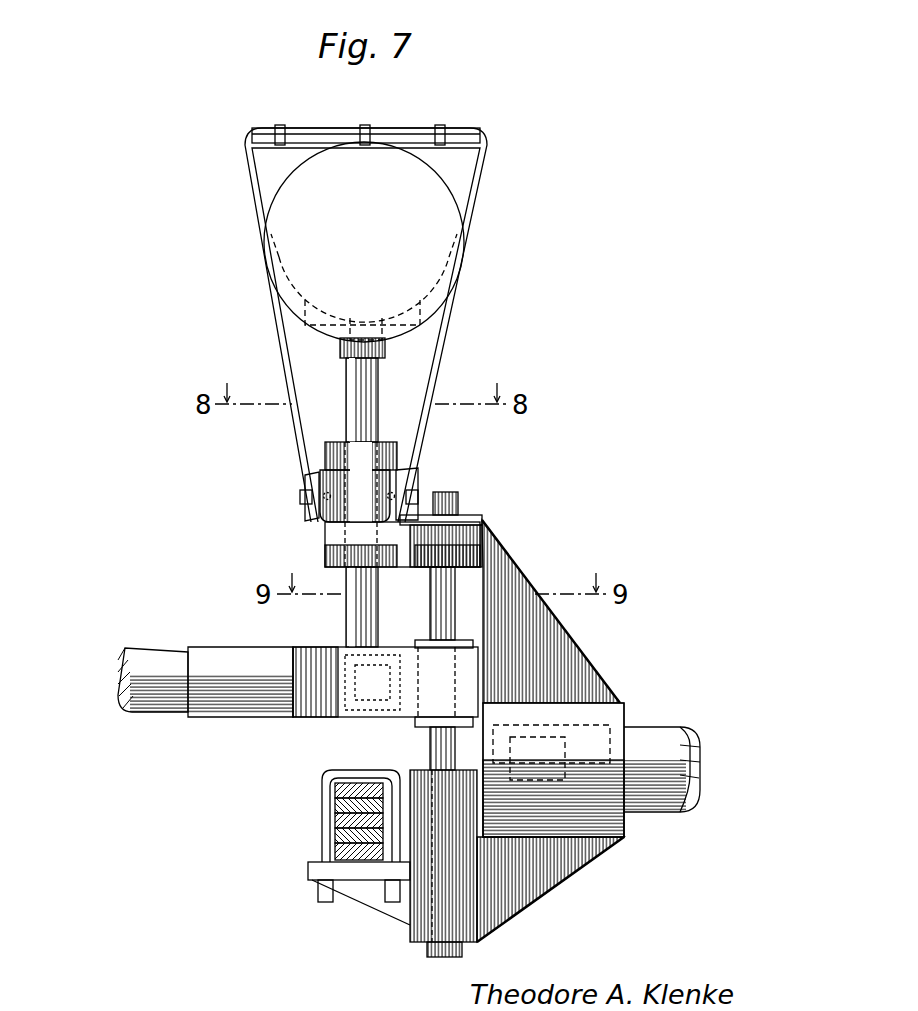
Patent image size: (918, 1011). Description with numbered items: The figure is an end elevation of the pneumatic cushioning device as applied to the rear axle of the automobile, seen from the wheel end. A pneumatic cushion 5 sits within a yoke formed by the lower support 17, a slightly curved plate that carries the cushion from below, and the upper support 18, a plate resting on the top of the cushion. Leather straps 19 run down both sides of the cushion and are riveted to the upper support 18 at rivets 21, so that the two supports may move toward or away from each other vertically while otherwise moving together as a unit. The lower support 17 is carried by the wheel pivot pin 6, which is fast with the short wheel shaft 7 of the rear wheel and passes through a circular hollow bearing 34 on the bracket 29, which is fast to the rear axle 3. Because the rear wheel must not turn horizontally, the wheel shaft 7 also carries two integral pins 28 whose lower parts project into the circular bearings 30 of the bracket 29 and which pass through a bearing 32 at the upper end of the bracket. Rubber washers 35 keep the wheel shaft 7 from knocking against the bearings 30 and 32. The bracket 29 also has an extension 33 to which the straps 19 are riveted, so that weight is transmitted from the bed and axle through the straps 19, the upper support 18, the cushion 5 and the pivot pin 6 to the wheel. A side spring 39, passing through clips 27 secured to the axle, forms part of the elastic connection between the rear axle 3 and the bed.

The rear axle 3 is at (650, 742).
The pneumatic cushion 5 is at (433, 245).
The wheel pivot pin 6 is at (356, 603).
The wheel shaft 7 is at (241, 702).
The lower support 17 is at (388, 333).
The upper support 18 is at (424, 138).
The straps 19 is at (289, 380).
The rivets 21 is at (440, 126).
The clips 27 is at (333, 814).
The pins 28 is at (450, 600).
The bracket 29 is at (585, 690).
The circular bearings 30 is at (416, 776).
The bearing 32 is at (470, 536).
The extension 33 is at (340, 530).
The circular hollow bearing 34 is at (333, 442).
The rubber washers 35 is at (385, 645).
The side spring 39 is at (330, 840).